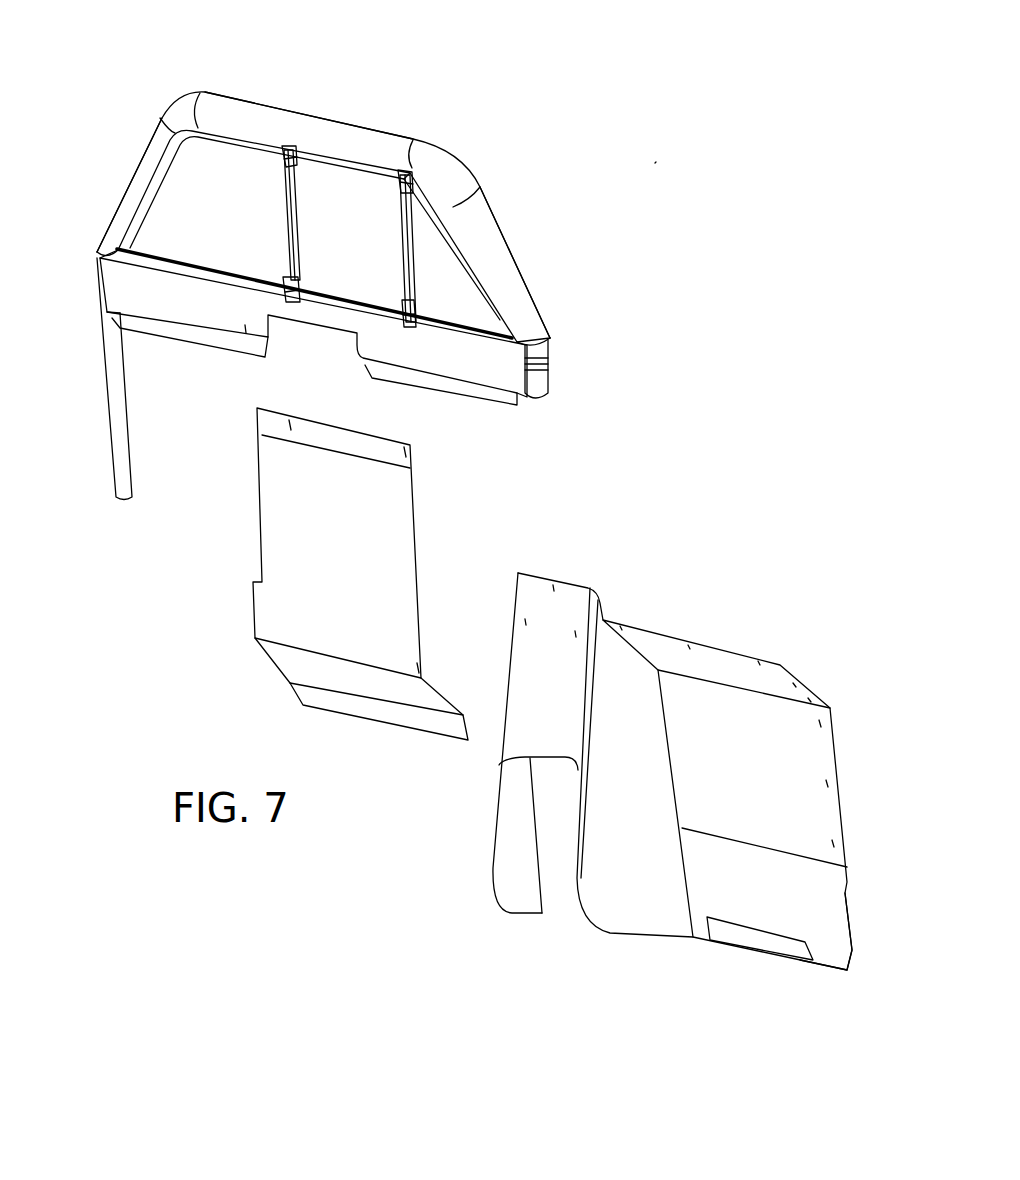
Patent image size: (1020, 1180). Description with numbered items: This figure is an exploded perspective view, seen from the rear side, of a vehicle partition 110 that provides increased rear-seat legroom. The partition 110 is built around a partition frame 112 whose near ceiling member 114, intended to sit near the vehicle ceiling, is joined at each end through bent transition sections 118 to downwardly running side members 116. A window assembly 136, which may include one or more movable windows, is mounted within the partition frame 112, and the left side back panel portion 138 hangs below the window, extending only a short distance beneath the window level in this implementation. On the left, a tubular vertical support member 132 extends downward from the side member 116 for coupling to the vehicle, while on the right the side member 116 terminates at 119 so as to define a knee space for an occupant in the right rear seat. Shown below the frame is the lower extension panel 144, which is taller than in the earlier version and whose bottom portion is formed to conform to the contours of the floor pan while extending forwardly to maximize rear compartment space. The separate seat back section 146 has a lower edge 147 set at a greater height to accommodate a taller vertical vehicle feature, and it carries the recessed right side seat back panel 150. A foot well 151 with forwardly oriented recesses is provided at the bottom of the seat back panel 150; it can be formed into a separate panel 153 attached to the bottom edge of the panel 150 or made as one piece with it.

The partition 110 is at (660, 157).
The partition frame 112 is at (292, 100).
The near ceiling member 114 is at (372, 130).
The side members 116 is at (120, 198).
The transition sections 118 is at (190, 94).
The side member termination 119 is at (547, 398).
The vertical support member 132 is at (105, 417).
The window assembly 136 is at (345, 278).
The left side back panel portion 138 is at (200, 333).
The lower extension panel 144 is at (420, 573).
The seat back section 146 is at (633, 938).
The lower edge 147 is at (555, 760).
The seat back panel 150 is at (773, 794).
The foot well 151 is at (765, 957).
The separate panel 153 is at (825, 972).